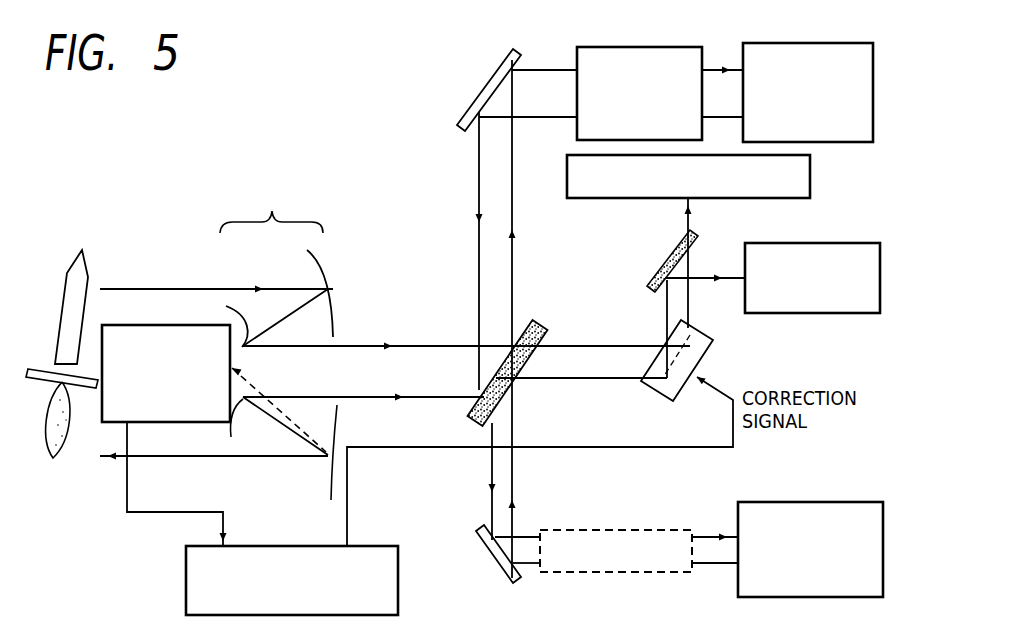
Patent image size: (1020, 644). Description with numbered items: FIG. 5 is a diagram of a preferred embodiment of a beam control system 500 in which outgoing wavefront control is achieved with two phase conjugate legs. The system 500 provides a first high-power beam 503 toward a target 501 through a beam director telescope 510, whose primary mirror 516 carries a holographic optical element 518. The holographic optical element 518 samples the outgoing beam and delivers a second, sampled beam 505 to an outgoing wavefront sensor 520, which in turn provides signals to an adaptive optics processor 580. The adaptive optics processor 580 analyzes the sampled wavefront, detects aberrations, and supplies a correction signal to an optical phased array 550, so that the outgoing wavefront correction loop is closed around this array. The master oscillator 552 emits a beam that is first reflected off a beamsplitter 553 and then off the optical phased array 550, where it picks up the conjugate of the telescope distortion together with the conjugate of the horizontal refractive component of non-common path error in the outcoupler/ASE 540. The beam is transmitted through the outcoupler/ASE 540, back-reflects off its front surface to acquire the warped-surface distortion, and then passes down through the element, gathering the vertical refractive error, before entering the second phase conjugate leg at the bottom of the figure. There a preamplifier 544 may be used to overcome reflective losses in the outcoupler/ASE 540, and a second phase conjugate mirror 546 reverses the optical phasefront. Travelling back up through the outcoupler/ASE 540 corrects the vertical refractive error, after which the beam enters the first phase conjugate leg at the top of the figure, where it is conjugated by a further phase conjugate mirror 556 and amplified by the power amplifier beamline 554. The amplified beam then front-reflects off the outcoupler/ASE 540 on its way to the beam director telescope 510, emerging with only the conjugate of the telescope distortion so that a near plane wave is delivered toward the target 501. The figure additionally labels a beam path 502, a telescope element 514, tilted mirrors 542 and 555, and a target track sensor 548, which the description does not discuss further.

The beam control system 500 is at (180, 160).
The target 501 is at (63, 305).
The outgoing beam 502 is at (185, 289).
The first beam of electromagnetic energy 503 is at (127, 458).
The second beam 505 is at (254, 387).
The beam director telescope 510 is at (290, 203).
The secondary mirror 514 is at (247, 300).
The primary mirror 516 is at (345, 288).
The holographic optical element 518 is at (320, 466).
The wavefront sensor 520 is at (187, 325).
The outcoupler/ASE 540 is at (470, 424).
The mirror 542 is at (490, 558).
The preamplifier 544 is at (614, 530).
The second phase conjugate mirror 546 is at (788, 502).
The target track sensor 548 is at (816, 176).
The optical phased array 550 is at (645, 388).
The master oscillator 552 is at (808, 313).
The beamsplitter 553 is at (680, 238).
The power amplifier beamline 554 is at (639, 47).
The mirror 555 is at (471, 106).
The phase conjugate mirror 556 is at (821, 43).
The adaptive optics processor 580 is at (186, 580).